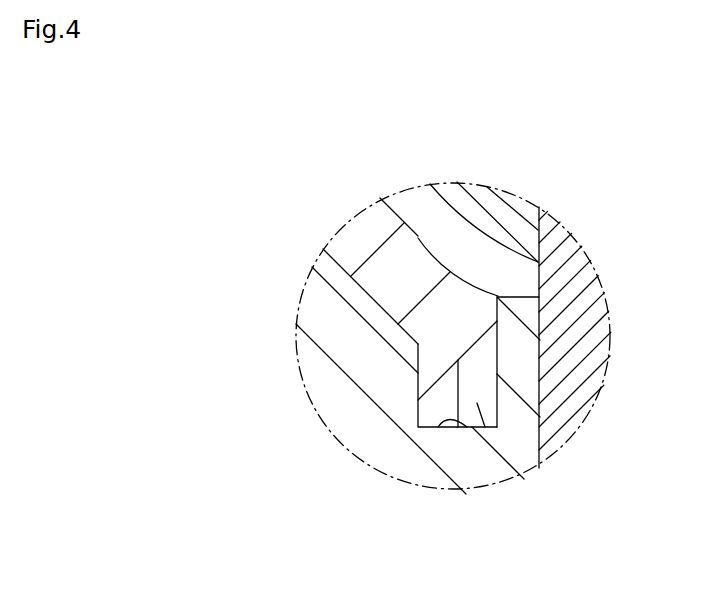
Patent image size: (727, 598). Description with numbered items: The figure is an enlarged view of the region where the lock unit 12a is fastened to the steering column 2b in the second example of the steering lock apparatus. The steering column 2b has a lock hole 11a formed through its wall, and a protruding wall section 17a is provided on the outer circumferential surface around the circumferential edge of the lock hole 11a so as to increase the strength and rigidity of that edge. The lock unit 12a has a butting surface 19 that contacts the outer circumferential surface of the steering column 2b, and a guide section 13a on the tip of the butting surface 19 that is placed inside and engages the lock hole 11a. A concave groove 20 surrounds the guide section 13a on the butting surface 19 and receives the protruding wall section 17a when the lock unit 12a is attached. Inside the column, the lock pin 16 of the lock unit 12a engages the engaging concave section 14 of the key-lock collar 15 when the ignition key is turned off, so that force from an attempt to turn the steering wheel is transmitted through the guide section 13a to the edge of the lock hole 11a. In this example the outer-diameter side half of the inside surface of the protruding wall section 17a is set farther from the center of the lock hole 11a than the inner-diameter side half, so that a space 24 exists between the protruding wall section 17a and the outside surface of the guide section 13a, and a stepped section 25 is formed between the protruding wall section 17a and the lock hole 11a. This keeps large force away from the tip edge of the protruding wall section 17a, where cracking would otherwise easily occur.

The steering column 2b is at (368, 216).
The key-lock collar 15 is at (457, 199).
The lock hole 11a is at (496, 313).
The engaging concave section 14 is at (542, 238).
The guide section 13a is at (540, 305).
The stepped section 25 is at (458, 362).
The lock pin 16 is at (566, 425).
The butting surface 19 is at (343, 268).
The lock unit 12a is at (320, 347).
The protruding wall section 17a is at (433, 407).
The concave groove 20 is at (461, 430).
The space 24 is at (494, 430).